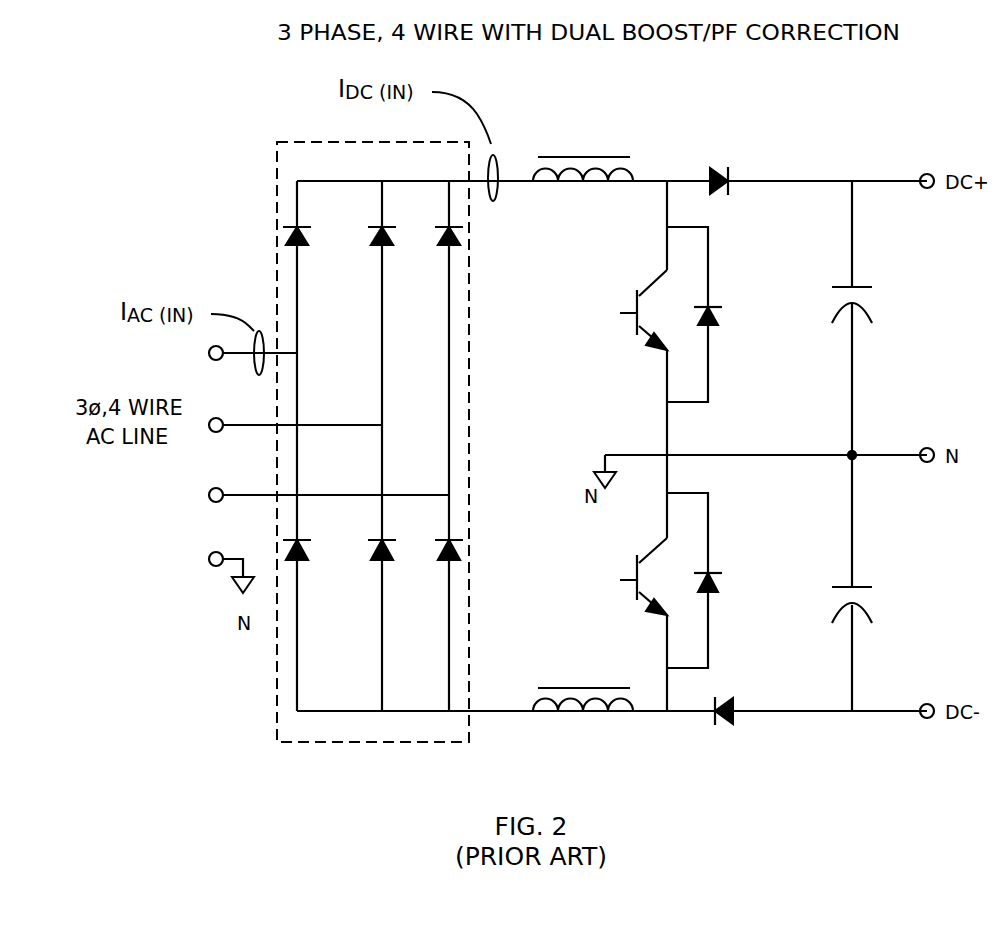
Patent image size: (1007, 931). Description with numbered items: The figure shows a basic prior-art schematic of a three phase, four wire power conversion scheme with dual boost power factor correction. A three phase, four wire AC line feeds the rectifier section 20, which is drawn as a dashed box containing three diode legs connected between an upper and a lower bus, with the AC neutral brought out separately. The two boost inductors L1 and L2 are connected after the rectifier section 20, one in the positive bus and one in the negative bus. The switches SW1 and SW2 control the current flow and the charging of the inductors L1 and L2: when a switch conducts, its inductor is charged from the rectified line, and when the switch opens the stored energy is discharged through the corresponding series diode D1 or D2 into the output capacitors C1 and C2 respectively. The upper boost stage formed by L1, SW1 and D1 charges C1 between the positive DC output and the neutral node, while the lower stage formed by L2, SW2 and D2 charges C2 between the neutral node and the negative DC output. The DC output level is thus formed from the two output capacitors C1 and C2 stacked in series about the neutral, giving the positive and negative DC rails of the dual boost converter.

The rectifier section 20 is at (278, 680).
The inductor L1 is at (583, 156).
The inductor L2 is at (583, 686).
The boost diode D1 is at (722, 166).
The boost diode D2 is at (722, 701).
The switch SW1 is at (688, 314).
The switch SW2 is at (688, 580).
The output capacitor C1 is at (867, 318).
The output capacitor C2 is at (867, 583).